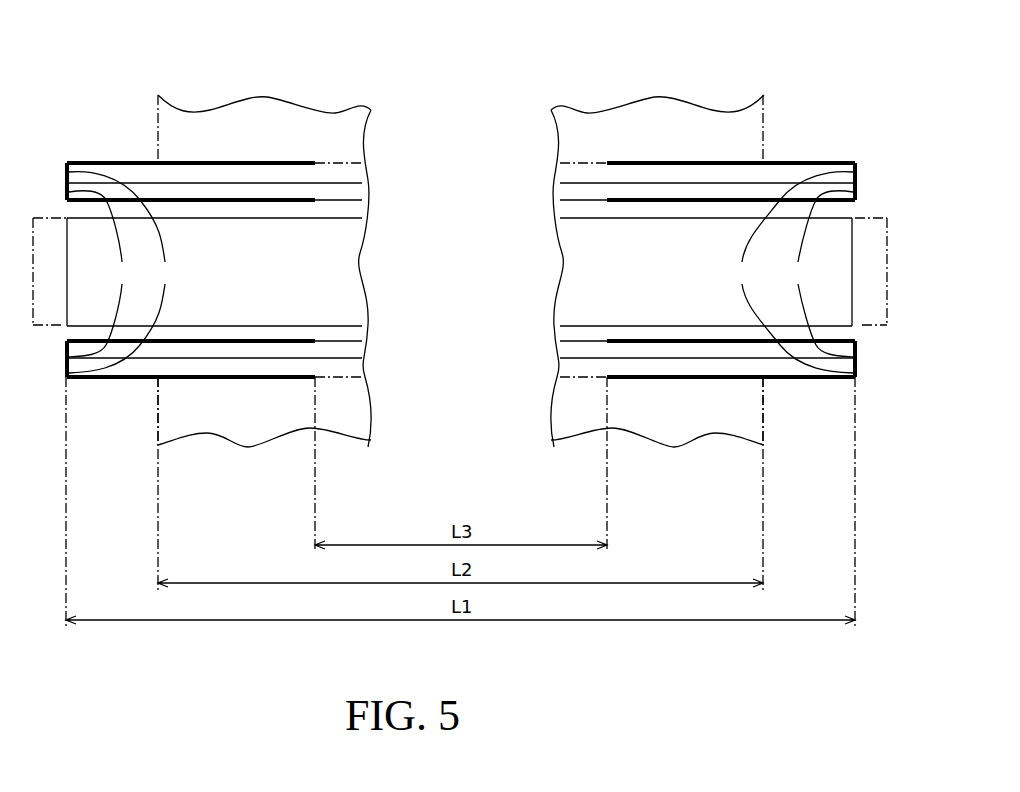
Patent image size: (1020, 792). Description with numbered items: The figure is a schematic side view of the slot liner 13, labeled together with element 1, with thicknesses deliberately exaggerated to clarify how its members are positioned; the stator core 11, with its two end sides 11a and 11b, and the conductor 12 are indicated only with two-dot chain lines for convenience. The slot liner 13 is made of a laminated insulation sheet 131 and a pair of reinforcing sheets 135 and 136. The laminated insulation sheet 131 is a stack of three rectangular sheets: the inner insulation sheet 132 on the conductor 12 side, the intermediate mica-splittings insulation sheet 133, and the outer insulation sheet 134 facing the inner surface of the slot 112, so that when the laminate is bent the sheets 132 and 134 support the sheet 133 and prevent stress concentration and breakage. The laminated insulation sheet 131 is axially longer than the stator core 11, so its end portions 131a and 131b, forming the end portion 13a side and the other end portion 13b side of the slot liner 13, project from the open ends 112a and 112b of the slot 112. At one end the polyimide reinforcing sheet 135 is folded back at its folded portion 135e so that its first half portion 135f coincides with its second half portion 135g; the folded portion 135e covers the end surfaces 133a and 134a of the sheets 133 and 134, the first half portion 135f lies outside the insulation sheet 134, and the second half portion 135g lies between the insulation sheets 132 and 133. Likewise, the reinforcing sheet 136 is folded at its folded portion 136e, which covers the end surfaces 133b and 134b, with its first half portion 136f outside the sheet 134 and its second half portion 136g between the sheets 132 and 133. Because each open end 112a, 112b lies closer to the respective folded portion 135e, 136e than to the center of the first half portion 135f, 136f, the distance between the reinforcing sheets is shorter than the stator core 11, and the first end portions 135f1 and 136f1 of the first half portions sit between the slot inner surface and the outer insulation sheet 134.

The component mounting structure 1 is at (84, 66).
The slot liner 13 is at (450, 187).
The stator core 11 is at (253, 447).
The first end of workpiece 11a is at (158, 437).
The second end of workpiece 11b is at (765, 435).
The slot 112 is at (334, 378).
The open end of the slot 112a is at (157, 382).
The open end of the slot 112b is at (765, 382).
The conductor 12 is at (52, 328).
The laminated insulation sheet 131 is at (487, 152).
The insulation sheet 132 is at (565, 209).
The insulation sheet 133 is at (565, 190).
The insulation sheet 134 is at (565, 175).
The end portion of the slot liner 13a is at (106, 150).
The end portion of the laminated insulation sheet 131a is at (107, 238).
The end portion of the slot liner 13b is at (816, 150).
The end portion of the laminated insulation sheet 131b is at (833, 240).
The end surface of the insulation sheet 133a is at (108, 274).
The end surface of the insulation sheet 134a is at (138, 272).
The end surface of the insulation sheet 133b is at (813, 274).
The end surface of the insulation sheet 134b is at (783, 272).
The reinforcing sheet 135 is at (80, 390).
The folded portion 135e is at (67, 183).
The first half portion 135f is at (256, 163).
The first end portion 135f1 is at (237, 273).
The second half portion 135g is at (240, 202).
The reinforcing sheet 136 is at (843, 390).
The folded portion 136e is at (855, 183).
The first half portion 136f is at (638, 163).
The first end portion 136f1 is at (685, 276).
The second half portion 136g is at (677, 202).